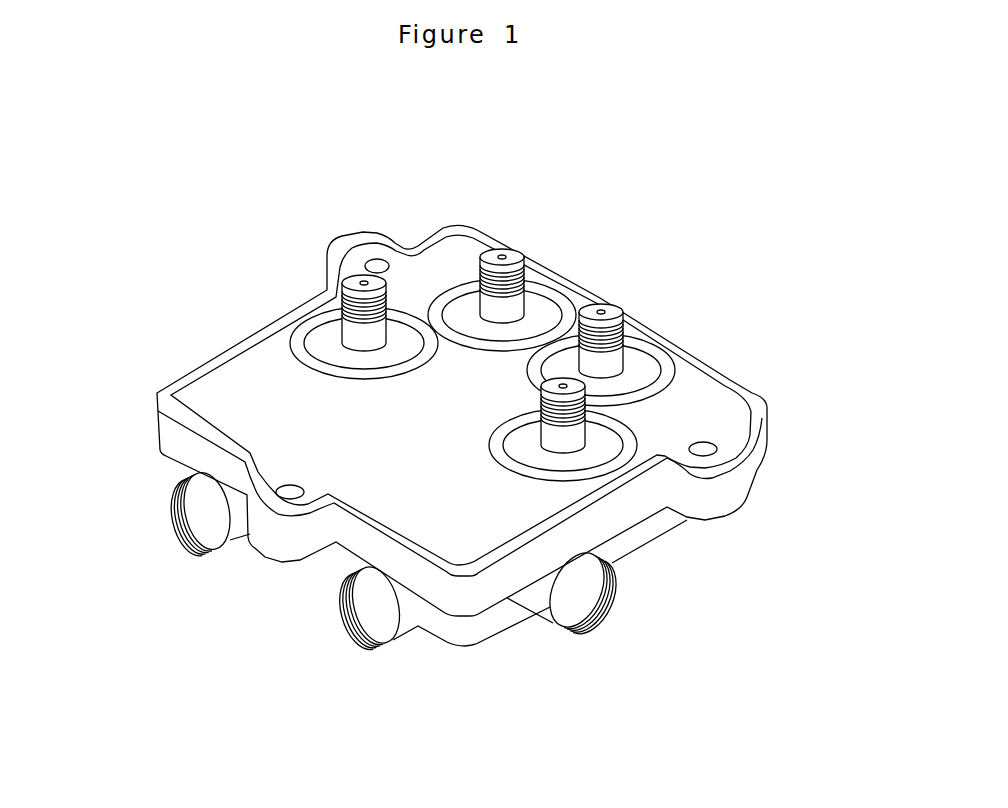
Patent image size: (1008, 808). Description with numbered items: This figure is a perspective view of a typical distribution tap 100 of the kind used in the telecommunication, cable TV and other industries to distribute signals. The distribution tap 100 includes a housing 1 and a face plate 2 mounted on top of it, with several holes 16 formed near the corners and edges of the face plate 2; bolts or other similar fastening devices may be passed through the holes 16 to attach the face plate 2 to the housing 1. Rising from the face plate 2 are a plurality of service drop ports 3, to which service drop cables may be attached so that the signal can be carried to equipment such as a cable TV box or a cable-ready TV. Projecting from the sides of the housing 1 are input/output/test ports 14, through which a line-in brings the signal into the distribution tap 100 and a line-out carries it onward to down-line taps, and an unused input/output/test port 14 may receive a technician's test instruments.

The distribution tap 100 is at (458, 436).
The housing 1 is at (725, 495).
The face plate 2 is at (222, 390).
The service drop ports 3 is at (367, 278).
The input/output/test ports 14 is at (210, 523).
The holes 16 is at (283, 481).